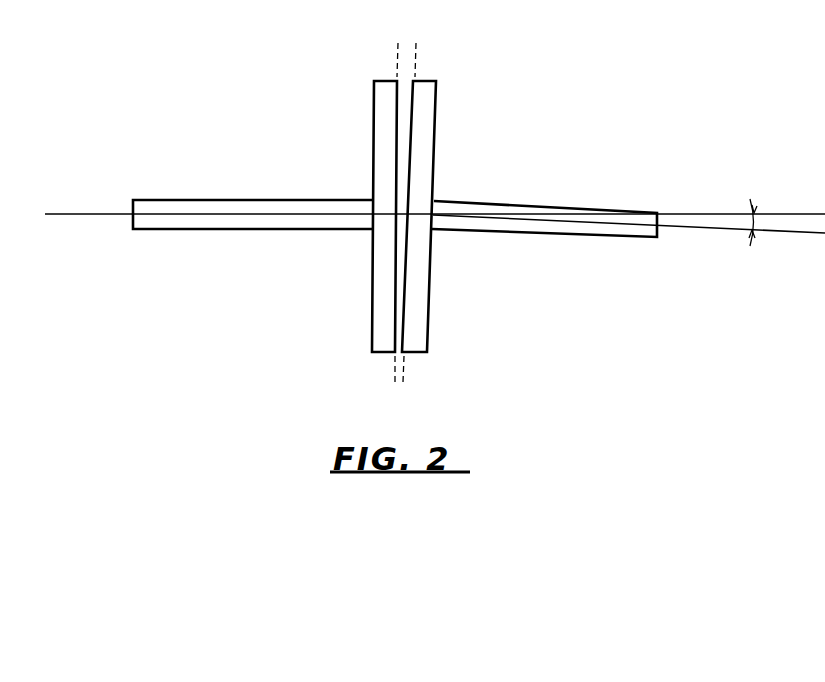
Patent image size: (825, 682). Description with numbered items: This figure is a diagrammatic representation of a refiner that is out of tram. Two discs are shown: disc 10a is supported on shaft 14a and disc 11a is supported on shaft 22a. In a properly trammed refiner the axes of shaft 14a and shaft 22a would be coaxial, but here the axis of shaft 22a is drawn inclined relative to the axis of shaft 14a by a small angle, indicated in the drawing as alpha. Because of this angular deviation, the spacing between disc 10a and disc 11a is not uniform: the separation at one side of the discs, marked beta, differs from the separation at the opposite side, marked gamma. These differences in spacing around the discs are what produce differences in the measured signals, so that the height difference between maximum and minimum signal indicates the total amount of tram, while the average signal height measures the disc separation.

The disc 10a is at (368, 214).
The disc 11a is at (437, 215).
The shaft 14a is at (253, 200).
The shaft 22a is at (628, 207).